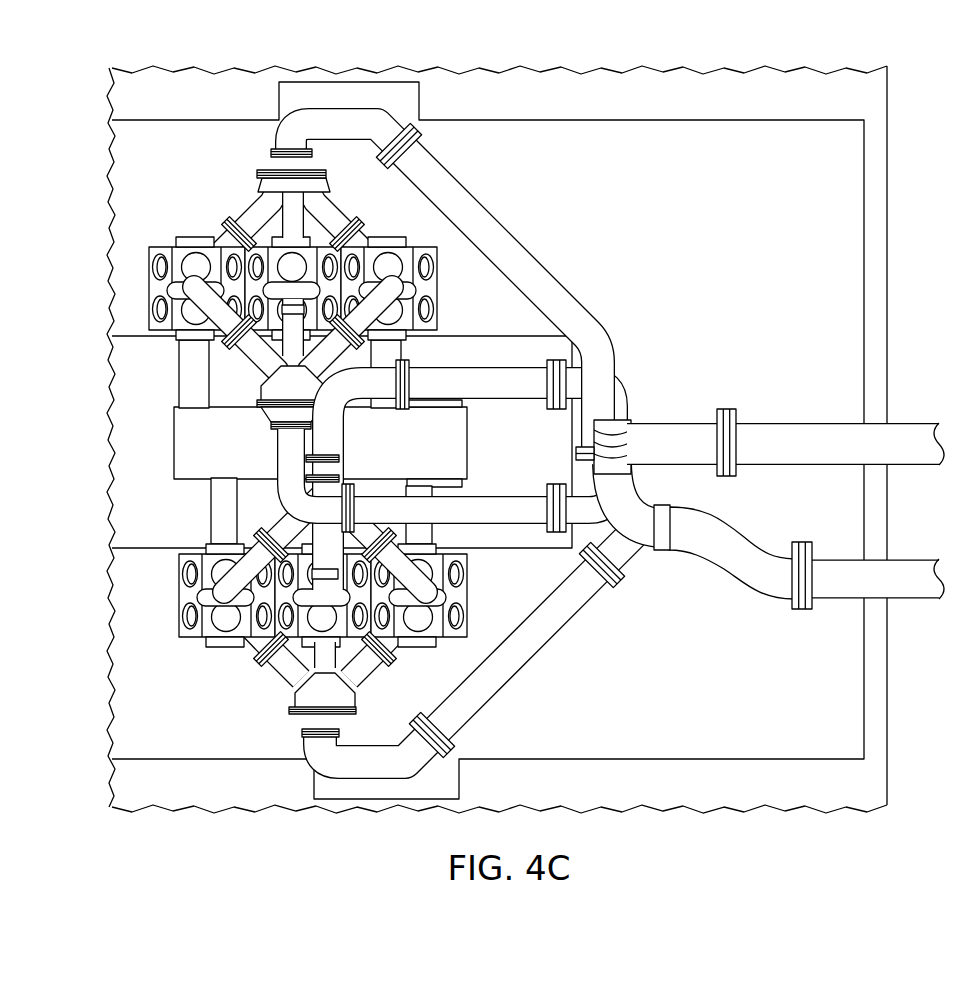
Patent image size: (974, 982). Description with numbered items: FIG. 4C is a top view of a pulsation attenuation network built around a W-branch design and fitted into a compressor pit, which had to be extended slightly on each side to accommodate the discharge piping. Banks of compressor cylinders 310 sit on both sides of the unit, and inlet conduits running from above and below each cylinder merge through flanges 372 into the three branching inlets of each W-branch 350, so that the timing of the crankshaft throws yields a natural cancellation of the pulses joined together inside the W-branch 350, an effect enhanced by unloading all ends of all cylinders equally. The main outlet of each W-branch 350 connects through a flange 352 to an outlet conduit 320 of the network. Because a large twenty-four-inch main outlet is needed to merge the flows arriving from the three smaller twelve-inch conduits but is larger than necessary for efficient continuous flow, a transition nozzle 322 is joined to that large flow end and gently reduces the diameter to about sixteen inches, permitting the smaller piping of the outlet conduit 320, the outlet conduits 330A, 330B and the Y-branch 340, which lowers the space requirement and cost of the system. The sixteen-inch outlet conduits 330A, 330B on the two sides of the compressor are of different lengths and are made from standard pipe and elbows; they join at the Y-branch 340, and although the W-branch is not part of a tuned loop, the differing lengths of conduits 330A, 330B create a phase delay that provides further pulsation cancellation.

The compressor cylinder 310 is at (150, 292).
The outlet conduit 320 is at (345, 117).
The transition nozzle 322 is at (277, 162).
The outlet conduit 330A is at (508, 237).
The outlet conduit 330B is at (540, 650).
The Y-branch 340 is at (638, 548).
The W-branch 350 is at (283, 198).
The flange 352 is at (328, 174).
The flange 372 is at (233, 225).